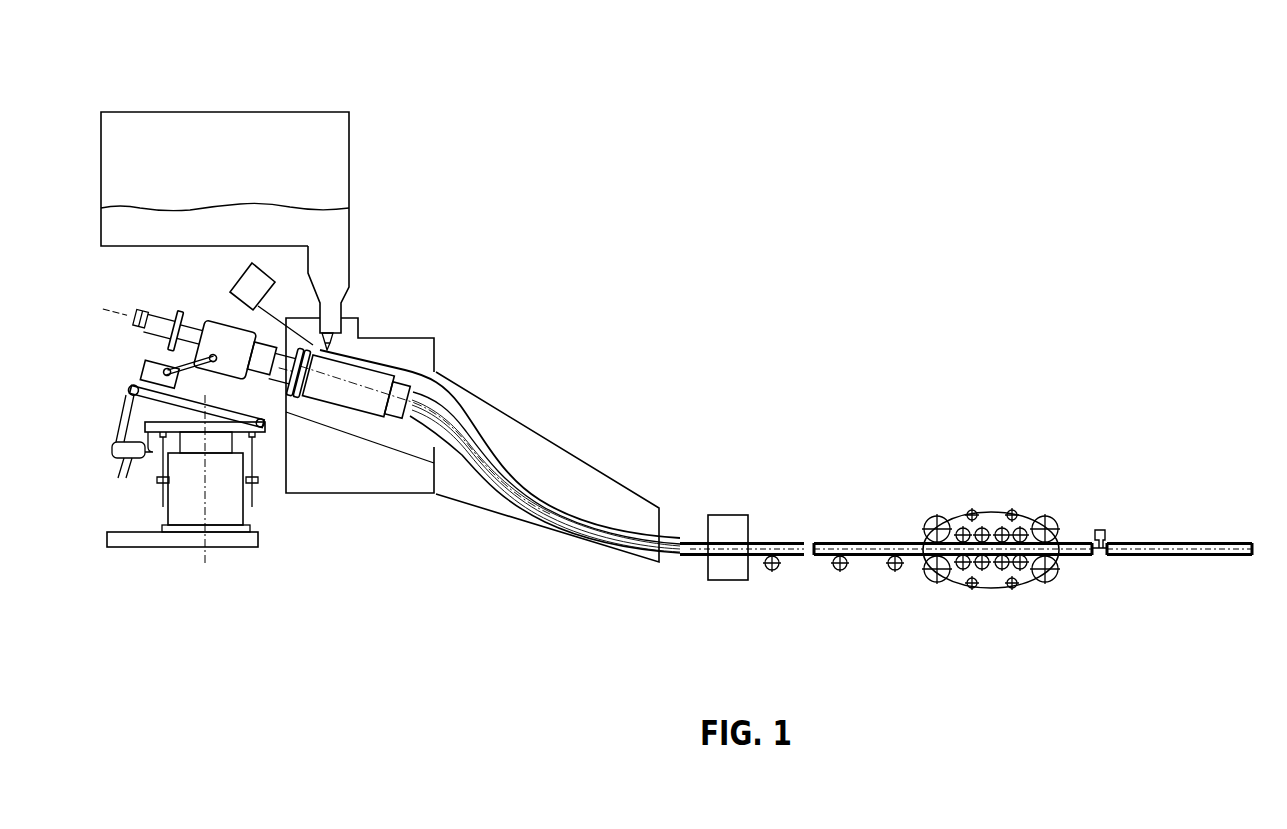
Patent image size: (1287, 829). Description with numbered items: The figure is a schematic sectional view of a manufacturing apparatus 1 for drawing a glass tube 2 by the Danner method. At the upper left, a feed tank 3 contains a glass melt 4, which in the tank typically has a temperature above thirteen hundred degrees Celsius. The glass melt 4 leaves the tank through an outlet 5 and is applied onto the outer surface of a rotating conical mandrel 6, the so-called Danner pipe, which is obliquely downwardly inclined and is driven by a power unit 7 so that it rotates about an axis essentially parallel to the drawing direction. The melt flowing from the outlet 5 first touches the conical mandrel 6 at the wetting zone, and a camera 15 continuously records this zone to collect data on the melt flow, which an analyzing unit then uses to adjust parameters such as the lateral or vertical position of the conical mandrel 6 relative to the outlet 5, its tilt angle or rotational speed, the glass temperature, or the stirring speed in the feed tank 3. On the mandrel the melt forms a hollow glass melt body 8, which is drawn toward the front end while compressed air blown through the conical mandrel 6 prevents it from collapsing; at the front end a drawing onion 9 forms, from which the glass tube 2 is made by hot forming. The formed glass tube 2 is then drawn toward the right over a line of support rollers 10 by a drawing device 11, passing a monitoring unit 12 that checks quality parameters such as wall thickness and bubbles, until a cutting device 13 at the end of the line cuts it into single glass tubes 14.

The manufacturing apparatus 1 is at (136, 582).
The glass tube 2 is at (822, 541).
The feed tank 3 is at (312, 130).
The glass melt 4 is at (330, 232).
The outlet 5 is at (355, 325).
The conical mandrel 6 is at (352, 397).
The power unit 7 is at (222, 497).
The hollow glass melt body 8 is at (400, 368).
The drawing onion 9 is at (445, 430).
The support rollers 10 is at (772, 572).
The drawing device 11 is at (985, 508).
The monitoring unit 12 is at (727, 514).
The cutting device 13 is at (1102, 525).
The single glass tubes 14 is at (1170, 552).
The camera 15 is at (232, 282).